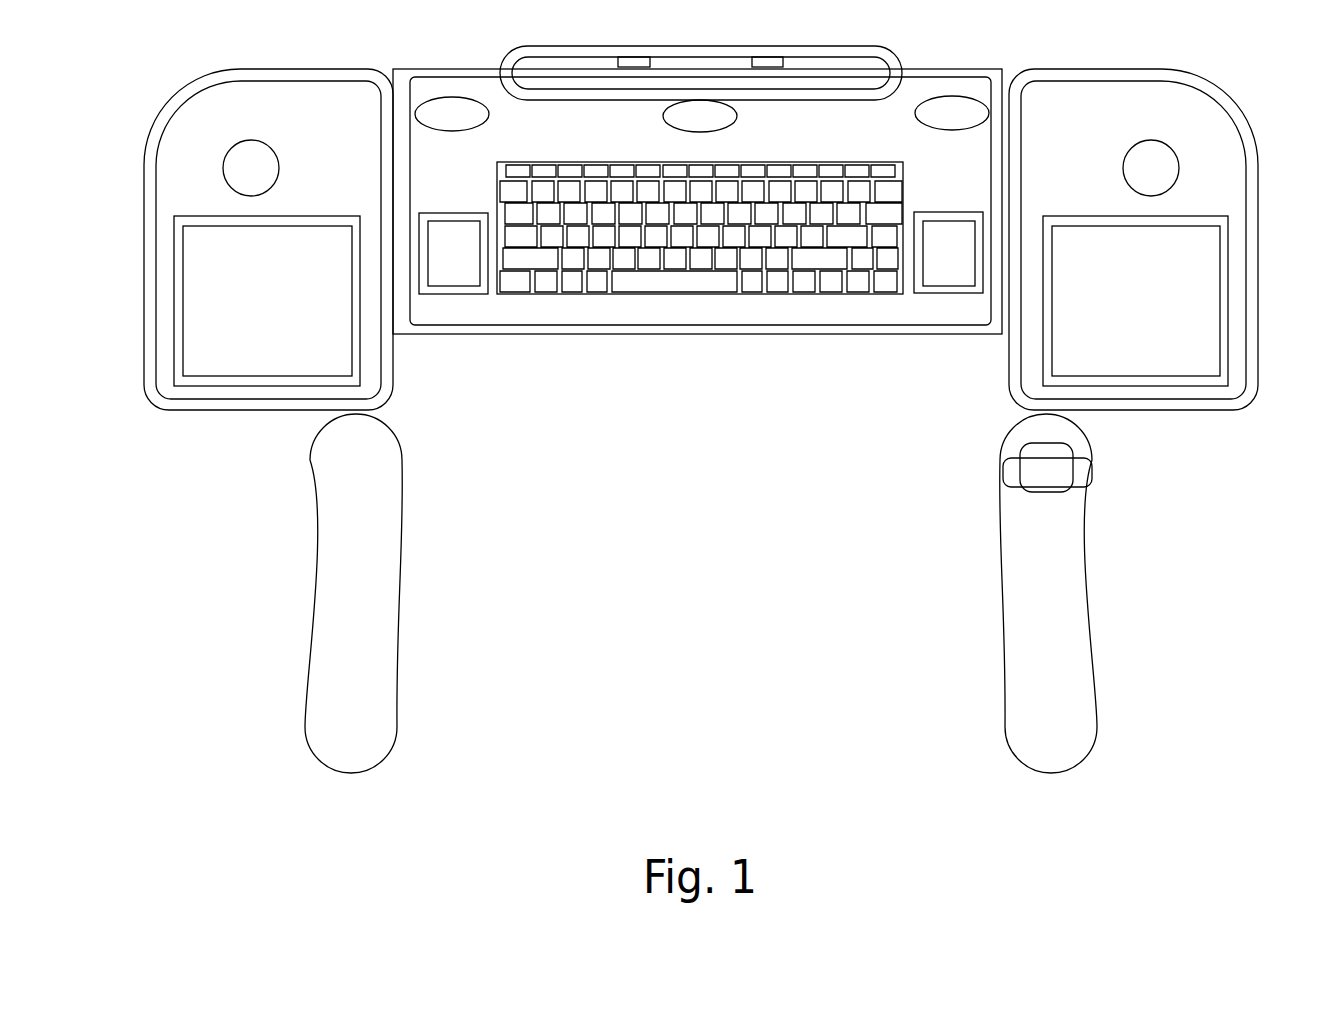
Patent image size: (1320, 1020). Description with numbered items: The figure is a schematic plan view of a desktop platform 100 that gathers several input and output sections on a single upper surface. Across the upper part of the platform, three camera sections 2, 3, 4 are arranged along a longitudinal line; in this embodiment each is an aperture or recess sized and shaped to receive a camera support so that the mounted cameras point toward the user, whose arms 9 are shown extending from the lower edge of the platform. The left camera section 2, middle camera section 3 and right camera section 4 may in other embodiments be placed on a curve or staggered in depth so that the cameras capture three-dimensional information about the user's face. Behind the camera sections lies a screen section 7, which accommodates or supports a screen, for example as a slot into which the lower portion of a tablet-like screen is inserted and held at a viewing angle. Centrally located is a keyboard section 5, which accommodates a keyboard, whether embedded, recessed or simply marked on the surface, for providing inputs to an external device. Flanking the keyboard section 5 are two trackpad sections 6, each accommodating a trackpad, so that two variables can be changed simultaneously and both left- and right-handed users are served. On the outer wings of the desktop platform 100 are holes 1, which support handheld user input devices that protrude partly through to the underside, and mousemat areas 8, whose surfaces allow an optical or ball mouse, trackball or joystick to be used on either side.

The desktop platform 100 is at (692, 560).
The holes 1 is at (1143, 182).
The left camera section 2 is at (452, 132).
The middle camera section 3 is at (700, 133).
The right camera section 4 is at (952, 131).
The keyboard section 5 is at (693, 316).
The trackpad sections 6 is at (461, 261).
The screen section 7 is at (701, 59).
The mousemat areas 8 is at (1139, 314).
The user's arms 9 is at (368, 622).